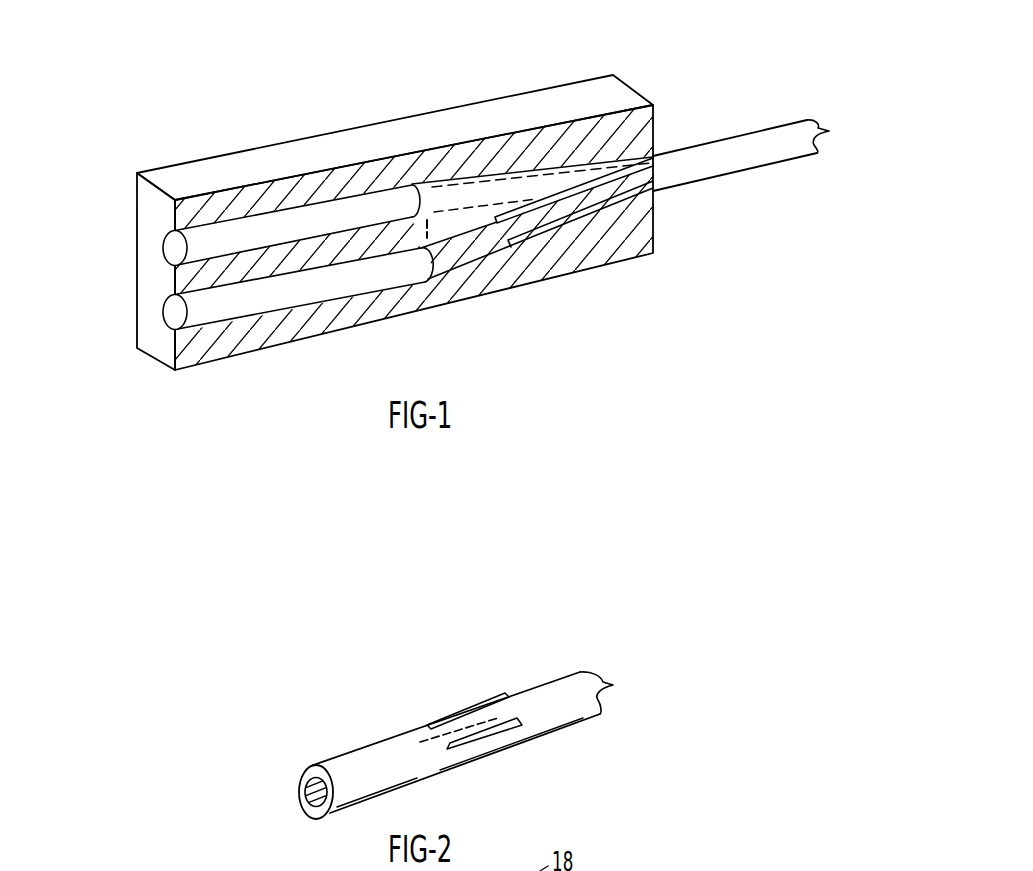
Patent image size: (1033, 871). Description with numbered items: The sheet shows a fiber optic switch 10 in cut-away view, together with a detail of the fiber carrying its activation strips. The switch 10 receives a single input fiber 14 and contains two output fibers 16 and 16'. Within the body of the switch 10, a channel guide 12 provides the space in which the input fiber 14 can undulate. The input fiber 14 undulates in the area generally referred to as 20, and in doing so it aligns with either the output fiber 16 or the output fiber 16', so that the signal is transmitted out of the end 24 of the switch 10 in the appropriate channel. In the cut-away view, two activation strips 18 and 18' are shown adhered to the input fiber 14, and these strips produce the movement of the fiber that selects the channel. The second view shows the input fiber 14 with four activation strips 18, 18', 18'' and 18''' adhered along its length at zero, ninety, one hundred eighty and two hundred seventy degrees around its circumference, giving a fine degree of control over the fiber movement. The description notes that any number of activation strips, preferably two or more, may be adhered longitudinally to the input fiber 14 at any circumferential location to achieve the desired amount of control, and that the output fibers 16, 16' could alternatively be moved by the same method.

In FIG. 1, the fiber optic switch 10 is at (382, 128).
In FIG. 1, the channel guide 12 is at (507, 170).
In FIG. 1, the input fiber 14 is at (813, 120).
In FIG. 2, the input fiber 14 is at (606, 709).
In FIG. 1, the output fiber 16 is at (237, 225).
In FIG. 1, the output fiber 16' is at (247, 329).
In FIG. 1, the activation strip 18 is at (580, 271).
In FIG. 2, the activation strip 18 is at (470, 675).
In FIG. 1, the activation strip 18' is at (583, 236).
In FIG. 2, the activation strip 18' is at (488, 681).
In FIG. 2, the activation strip 18'' is at (527, 685).
In FIG. 2, the activation strip 18''' is at (484, 762).
In FIG. 1, the undulation area 20 is at (427, 222).
In FIG. 1, the end of switch 24 is at (120, 270).